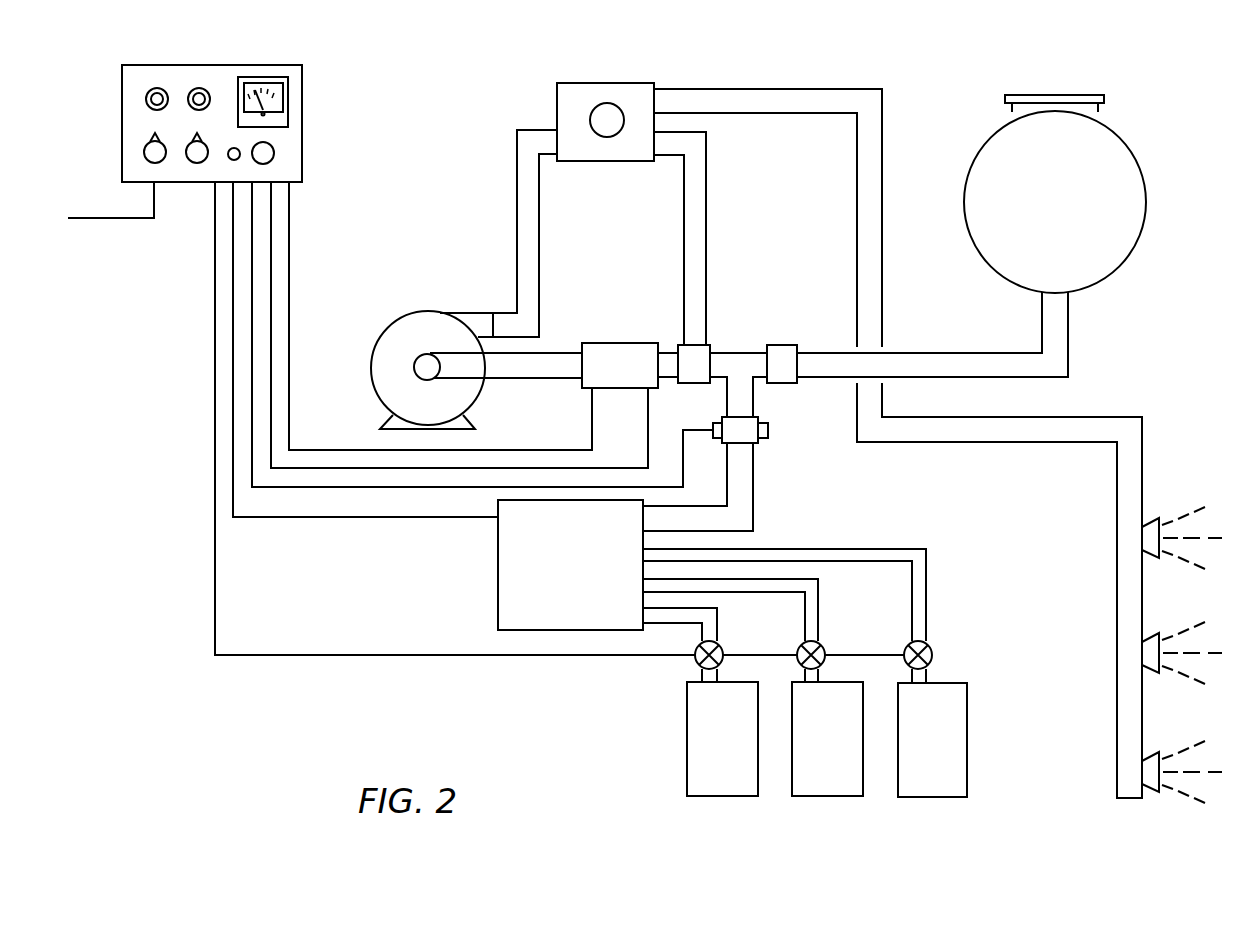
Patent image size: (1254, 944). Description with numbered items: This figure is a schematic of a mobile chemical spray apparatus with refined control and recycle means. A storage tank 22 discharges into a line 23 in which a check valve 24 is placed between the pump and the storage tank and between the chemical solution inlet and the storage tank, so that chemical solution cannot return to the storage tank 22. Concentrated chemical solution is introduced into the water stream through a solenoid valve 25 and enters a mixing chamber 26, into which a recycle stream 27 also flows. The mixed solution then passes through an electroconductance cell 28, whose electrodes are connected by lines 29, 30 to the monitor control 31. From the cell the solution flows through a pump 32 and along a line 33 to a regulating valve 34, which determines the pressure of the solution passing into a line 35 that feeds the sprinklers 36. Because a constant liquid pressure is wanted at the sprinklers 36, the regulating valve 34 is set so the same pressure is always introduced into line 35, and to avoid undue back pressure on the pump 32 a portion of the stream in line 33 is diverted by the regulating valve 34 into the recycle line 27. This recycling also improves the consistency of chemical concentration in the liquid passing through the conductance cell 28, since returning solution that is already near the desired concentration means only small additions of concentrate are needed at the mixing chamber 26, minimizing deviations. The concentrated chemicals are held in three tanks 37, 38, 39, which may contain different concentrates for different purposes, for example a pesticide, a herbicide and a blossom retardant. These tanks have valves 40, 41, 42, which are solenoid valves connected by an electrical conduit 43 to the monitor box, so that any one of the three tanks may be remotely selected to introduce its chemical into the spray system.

The storage tank 22 is at (1118, 158).
The line 23 is at (1057, 338).
The check valve 24 is at (788, 355).
The solenoid valve 25 is at (767, 433).
The mixing chamber 26 is at (703, 355).
The recycle stream 27 is at (698, 233).
The electroconductance cell 28 is at (615, 353).
The line 29 is at (593, 433).
The line 30 is at (648, 433).
The monitor control 31 is at (295, 133).
The pump 32 is at (395, 338).
The line 33 is at (523, 230).
The regulating valve 34 is at (565, 112).
The line 35 is at (873, 162).
The sprinklers 36 is at (1152, 632).
The tank 37 is at (738, 790).
The tank 38 is at (843, 790).
The tank 39 is at (950, 788).
The valve 40 is at (722, 651).
The valve 41 is at (824, 651).
The valve 42 is at (930, 650).
The electrical conduit 43 is at (378, 655).